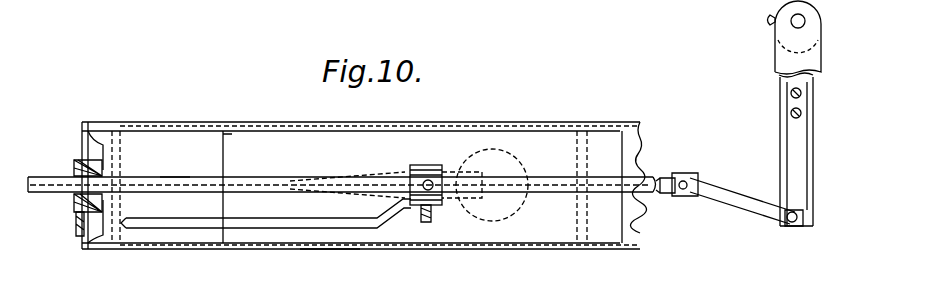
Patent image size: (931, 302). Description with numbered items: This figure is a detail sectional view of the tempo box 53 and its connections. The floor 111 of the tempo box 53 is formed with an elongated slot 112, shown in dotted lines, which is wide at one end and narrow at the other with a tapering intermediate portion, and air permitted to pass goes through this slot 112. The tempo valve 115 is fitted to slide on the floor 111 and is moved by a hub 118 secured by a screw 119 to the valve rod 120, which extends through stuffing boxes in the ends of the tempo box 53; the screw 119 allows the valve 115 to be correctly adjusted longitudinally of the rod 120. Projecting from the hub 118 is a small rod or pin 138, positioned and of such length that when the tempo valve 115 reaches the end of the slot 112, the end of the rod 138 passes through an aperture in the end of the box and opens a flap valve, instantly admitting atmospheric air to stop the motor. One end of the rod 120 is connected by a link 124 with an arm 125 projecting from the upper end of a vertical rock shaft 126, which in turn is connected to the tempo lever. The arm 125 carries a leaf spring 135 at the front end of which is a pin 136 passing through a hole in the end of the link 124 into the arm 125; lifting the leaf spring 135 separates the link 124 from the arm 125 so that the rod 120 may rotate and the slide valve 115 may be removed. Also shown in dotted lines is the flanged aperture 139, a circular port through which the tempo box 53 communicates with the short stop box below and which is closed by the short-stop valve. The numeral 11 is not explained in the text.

The rod 11 is at (400, 226).
The tempo box 53 is at (333, 250).
The floor 111 is at (178, 157).
The elongated slot 112 is at (375, 164).
The tempo valve 115 is at (364, 185).
The hub 118 is at (426, 166).
The screw 119 is at (431, 215).
The valve rod 120 is at (150, 172).
The link 124 is at (738, 198).
The arm 125 is at (786, 129).
The vertical rock shaft 126 is at (791, 26).
The leaf spring 135 is at (76, 227).
The pin 136 is at (792, 224).
The small rod or pin 138 is at (183, 221).
The flanged aperture 139 is at (529, 169).